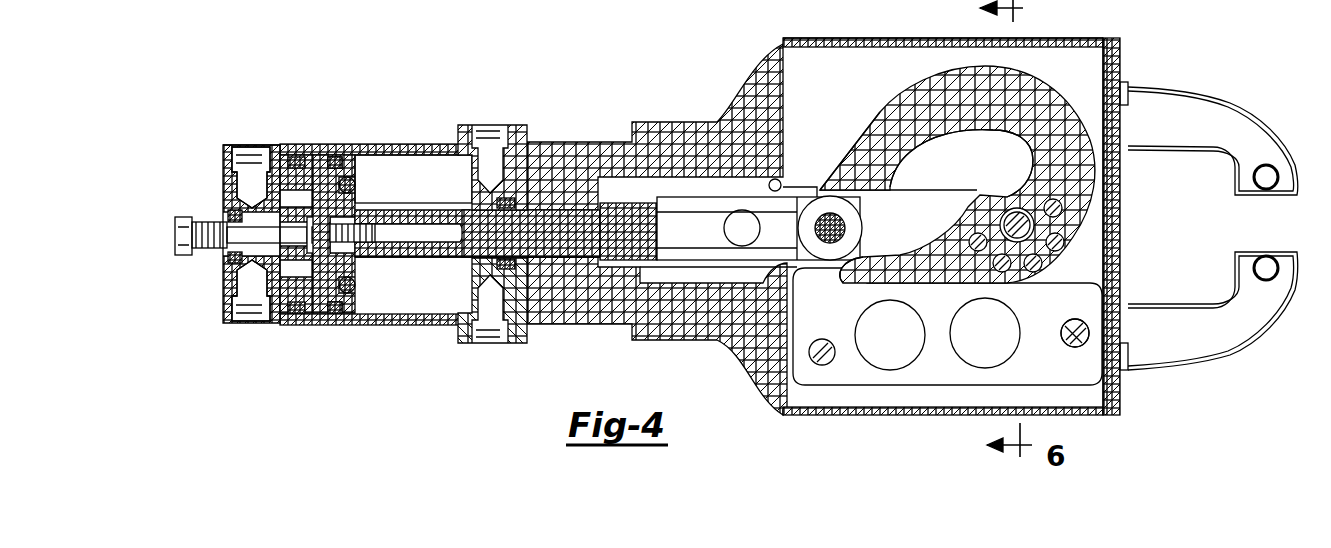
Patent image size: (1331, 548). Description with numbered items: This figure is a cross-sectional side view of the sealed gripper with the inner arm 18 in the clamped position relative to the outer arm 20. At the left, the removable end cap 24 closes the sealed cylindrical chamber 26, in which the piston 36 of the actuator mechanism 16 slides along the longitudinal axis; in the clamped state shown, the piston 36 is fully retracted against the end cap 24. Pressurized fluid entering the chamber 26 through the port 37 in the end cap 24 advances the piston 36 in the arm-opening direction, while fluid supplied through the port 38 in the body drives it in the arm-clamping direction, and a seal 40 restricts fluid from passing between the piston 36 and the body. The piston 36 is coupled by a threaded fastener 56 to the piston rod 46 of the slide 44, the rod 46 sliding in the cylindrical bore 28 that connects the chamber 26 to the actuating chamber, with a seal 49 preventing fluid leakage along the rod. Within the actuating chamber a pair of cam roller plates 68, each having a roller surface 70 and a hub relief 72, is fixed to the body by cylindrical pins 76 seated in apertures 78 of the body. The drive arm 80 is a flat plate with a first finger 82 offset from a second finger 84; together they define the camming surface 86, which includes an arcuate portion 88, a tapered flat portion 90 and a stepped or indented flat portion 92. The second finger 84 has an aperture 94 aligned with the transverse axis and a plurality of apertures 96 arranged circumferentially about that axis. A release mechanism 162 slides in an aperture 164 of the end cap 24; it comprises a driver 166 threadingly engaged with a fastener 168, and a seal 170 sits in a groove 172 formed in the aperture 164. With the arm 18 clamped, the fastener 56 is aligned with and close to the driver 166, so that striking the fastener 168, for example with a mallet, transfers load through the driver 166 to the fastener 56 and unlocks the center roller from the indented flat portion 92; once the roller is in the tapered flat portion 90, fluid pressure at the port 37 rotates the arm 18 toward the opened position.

The actuator mechanism 16 is at (408, 266).
The inner arm 18 is at (1182, 110).
The outer arm 20 is at (1180, 350).
The end cap 24 is at (225, 180).
The cylindrical chamber 26 is at (379, 197).
The cylindrical bore 28 is at (394, 150).
The piston 36 is at (325, 308).
The port 37 is at (267, 152).
The port 38 is at (500, 127).
The seal 40 is at (333, 150).
The slide 44 is at (552, 257).
The piston rod 46 is at (458, 257).
The seal 49 is at (508, 198).
The threaded fastener 56 is at (326, 190).
The cam roller plate 68 is at (923, 378).
The roller surface 70 is at (745, 348).
The hub relief 72 is at (1067, 283).
The pin 76 is at (825, 366).
The aperture 78 is at (1080, 348).
The drive arm 80 is at (1050, 60).
The first finger 82 is at (858, 147).
The second finger 84 is at (867, 282).
The camming surface 86 is at (937, 147).
The arcuate portion 88 is at (980, 193).
The tapered flat portion 90 is at (874, 196).
The indented flat portion 92 is at (822, 200).
The aperture 94 is at (1057, 133).
The apertures 96 is at (1040, 245).
The release mechanism 162 is at (213, 266).
The aperture 164 is at (281, 278).
The driver 166 is at (290, 157).
The fastener 168 is at (185, 215).
The seal 170 is at (232, 148).
The groove 172 is at (249, 312).